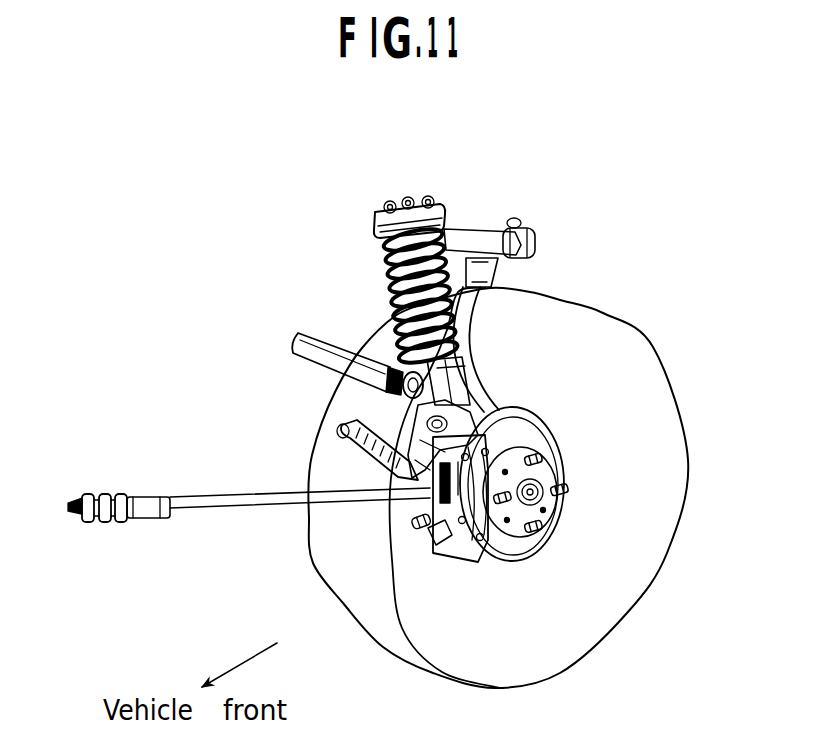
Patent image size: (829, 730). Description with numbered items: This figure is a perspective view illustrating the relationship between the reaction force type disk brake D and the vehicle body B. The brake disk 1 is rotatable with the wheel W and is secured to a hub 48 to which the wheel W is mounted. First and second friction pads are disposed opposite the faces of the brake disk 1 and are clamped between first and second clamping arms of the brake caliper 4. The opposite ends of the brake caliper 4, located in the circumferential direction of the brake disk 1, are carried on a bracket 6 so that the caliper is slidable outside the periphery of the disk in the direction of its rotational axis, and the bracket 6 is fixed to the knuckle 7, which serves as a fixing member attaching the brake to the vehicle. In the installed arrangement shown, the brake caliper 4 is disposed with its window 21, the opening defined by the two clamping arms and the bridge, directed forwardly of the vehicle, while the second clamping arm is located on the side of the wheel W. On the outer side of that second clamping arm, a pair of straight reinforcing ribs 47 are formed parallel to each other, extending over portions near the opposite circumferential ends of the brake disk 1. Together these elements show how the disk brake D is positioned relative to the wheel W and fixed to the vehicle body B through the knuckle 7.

The wheel W is at (674, 378).
The vehicle body B is at (490, 334).
The knuckle 7 is at (474, 382).
The window 21 is at (400, 472).
The brake disk 1 is at (557, 513).
The hub 48 is at (553, 459).
The bracket 6 is at (491, 545).
The brake caliper 4 is at (448, 545).
The disk brake D is at (418, 530).
The reinforcing ribs 47 is at (437, 536).